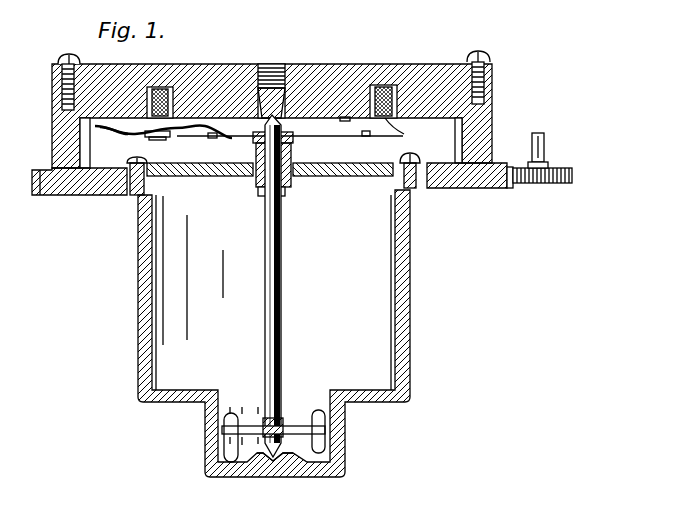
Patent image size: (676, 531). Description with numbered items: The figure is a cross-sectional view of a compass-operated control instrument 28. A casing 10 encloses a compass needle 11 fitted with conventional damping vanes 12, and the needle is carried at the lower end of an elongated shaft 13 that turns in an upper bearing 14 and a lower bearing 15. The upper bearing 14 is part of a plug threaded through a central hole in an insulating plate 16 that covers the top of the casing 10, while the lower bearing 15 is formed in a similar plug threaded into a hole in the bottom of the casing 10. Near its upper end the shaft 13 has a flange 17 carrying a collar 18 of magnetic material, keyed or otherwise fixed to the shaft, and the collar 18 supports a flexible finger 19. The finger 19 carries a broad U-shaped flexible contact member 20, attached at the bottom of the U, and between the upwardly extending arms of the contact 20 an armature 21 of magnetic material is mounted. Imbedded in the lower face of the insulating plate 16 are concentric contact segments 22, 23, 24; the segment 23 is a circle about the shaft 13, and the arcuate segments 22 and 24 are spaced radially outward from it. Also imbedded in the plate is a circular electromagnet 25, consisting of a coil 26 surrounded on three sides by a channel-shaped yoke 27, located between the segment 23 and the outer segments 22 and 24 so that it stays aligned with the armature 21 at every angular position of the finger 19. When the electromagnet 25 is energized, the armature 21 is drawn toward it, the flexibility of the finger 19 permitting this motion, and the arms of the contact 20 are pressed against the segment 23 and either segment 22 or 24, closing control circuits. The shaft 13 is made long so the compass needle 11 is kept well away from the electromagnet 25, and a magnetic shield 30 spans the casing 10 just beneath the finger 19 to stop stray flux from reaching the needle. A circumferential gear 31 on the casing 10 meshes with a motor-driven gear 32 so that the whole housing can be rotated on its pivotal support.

The casing 10 is at (406, 296).
The compass needle 11 is at (307, 428).
The damping vanes 12 is at (227, 446).
The shaft 13 is at (279, 348).
The upper bearing 14 is at (271, 95).
The lower bearing 15 is at (270, 470).
The insulating plate 16 is at (351, 77).
The flange 17 is at (286, 192).
The collar 18 is at (291, 153).
The flexible finger 19 is at (376, 137).
The flexible contact member 20 is at (117, 135).
The armature 21 is at (178, 137).
The contact segment 22 is at (93, 128).
The contact segment 23 is at (214, 138).
The contact segment 24 is at (455, 122).
The electromagnet 25 is at (364, 130).
The coil 26 is at (405, 133).
The yoke 27 is at (392, 84).
The control instrument 28 is at (422, 205).
The magnetic shield 30 is at (366, 171).
The circumferential gear 31 is at (48, 187).
The gear 32 is at (560, 184).